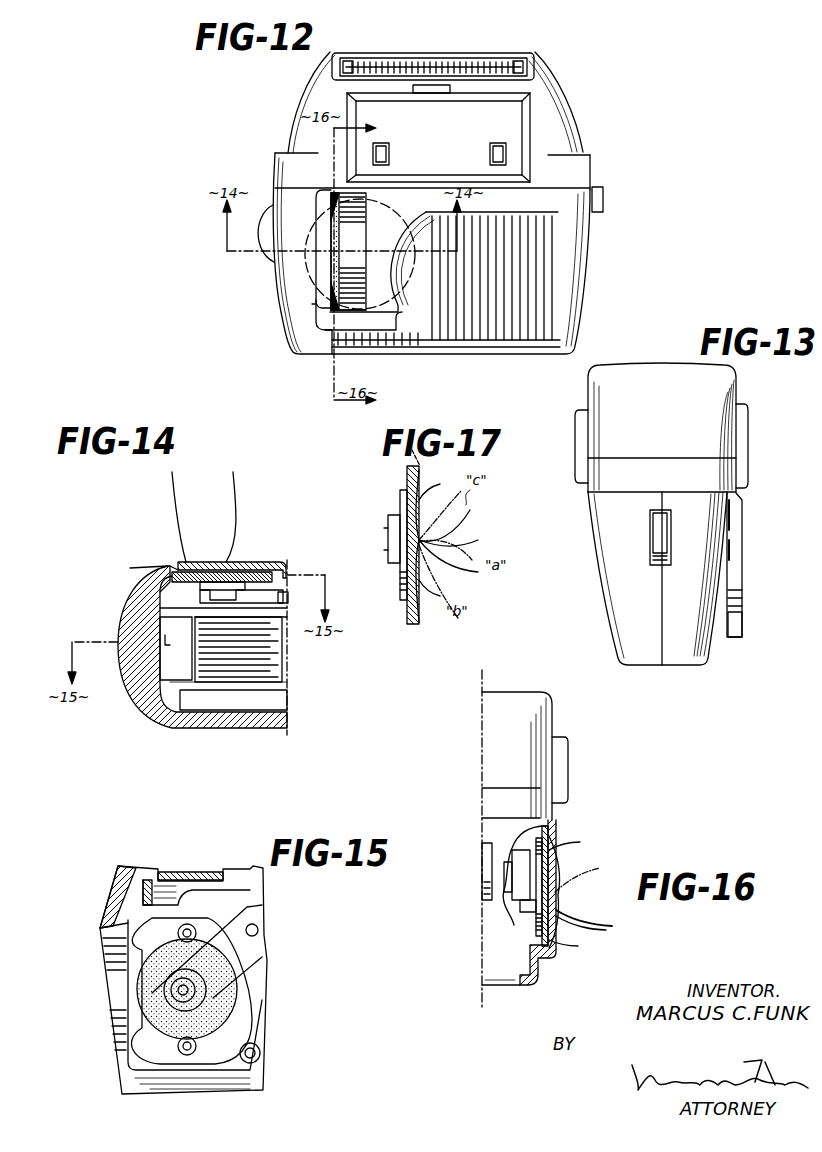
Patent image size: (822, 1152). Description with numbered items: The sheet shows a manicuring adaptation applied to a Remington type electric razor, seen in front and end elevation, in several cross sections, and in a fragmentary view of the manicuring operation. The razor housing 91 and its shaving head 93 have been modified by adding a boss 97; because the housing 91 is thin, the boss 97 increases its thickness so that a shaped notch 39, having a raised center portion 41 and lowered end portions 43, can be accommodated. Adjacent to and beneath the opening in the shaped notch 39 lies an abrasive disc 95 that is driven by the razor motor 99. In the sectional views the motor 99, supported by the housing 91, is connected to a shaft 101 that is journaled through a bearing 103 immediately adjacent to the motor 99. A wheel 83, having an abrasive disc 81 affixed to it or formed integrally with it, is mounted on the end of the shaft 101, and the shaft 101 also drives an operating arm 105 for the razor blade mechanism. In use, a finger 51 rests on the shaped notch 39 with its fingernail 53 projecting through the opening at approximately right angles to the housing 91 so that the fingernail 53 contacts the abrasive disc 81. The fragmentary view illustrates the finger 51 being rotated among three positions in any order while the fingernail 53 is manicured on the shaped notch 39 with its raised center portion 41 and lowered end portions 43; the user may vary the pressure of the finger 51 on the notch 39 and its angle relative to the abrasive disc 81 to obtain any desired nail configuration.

In FIG. 12, the shaped notch 39 is at (333, 266).
In FIG. 14, the shaped notch 39 is at (172, 566).
In FIG. 17, the shaped notch 39 is at (426, 523).
In FIG. 16, the shaped notch 39 is at (568, 872).
In FIG. 12, the raised center portion 41 is at (352, 248).
In FIG. 17, the raised center portion 41 is at (452, 540).
In FIG. 16, the raised center portion 41 is at (578, 886).
In FIG. 12, the lowered end portions 43 is at (360, 218).
In FIG. 17, the lowered end portions 43 is at (424, 494).
In FIG. 16, the lowered end portions 43 is at (568, 846).
In FIG. 14, the finger 51 is at (236, 528).
In FIG. 16, the finger 51 is at (613, 933).
In FIG. 14, the fingernail 53 is at (182, 548).
In FIG. 14, the abrasive disc 81 is at (252, 562).
In FIG. 17, the abrasive disc 81 is at (408, 596).
In FIG. 15, the abrasive disc 81 is at (228, 1012).
In FIG. 16, the abrasive disc 81 is at (548, 842).
In FIG. 14, the wheel 83 is at (282, 577).
In FIG. 17, the wheel 83 is at (400, 588).
In FIG. 16, the wheel 83 is at (534, 940).
In FIG. 12, the razor housing 91 is at (564, 122).
In FIG. 13, the razor housing 91 is at (600, 583).
In FIG. 14, the razor housing 91 is at (156, 706).
In FIG. 15, the razor housing 91 is at (110, 963).
In FIG. 16, the razor housing 91 is at (488, 772).
In FIG. 12, the shaving head 93 is at (431, 58).
In FIG. 12, the abrasive disc 95 is at (322, 222).
In FIG. 12, the boss 97 is at (318, 300).
In FIG. 13, the boss 97 is at (736, 600).
In FIG. 14, the razor motor 99 is at (283, 657).
In FIG. 15, the razor motor 99 is at (258, 1047).
In FIG. 14, the shaft 101 is at (224, 576).
In FIG. 15, the shaft 101 is at (182, 990).
In FIG. 16, the shaft 101 is at (522, 888).
In FIG. 14, the bearing 103 is at (203, 599).
In FIG. 16, the bearing 103 is at (522, 914).
In FIG. 15, the operating arm 105 is at (255, 948).